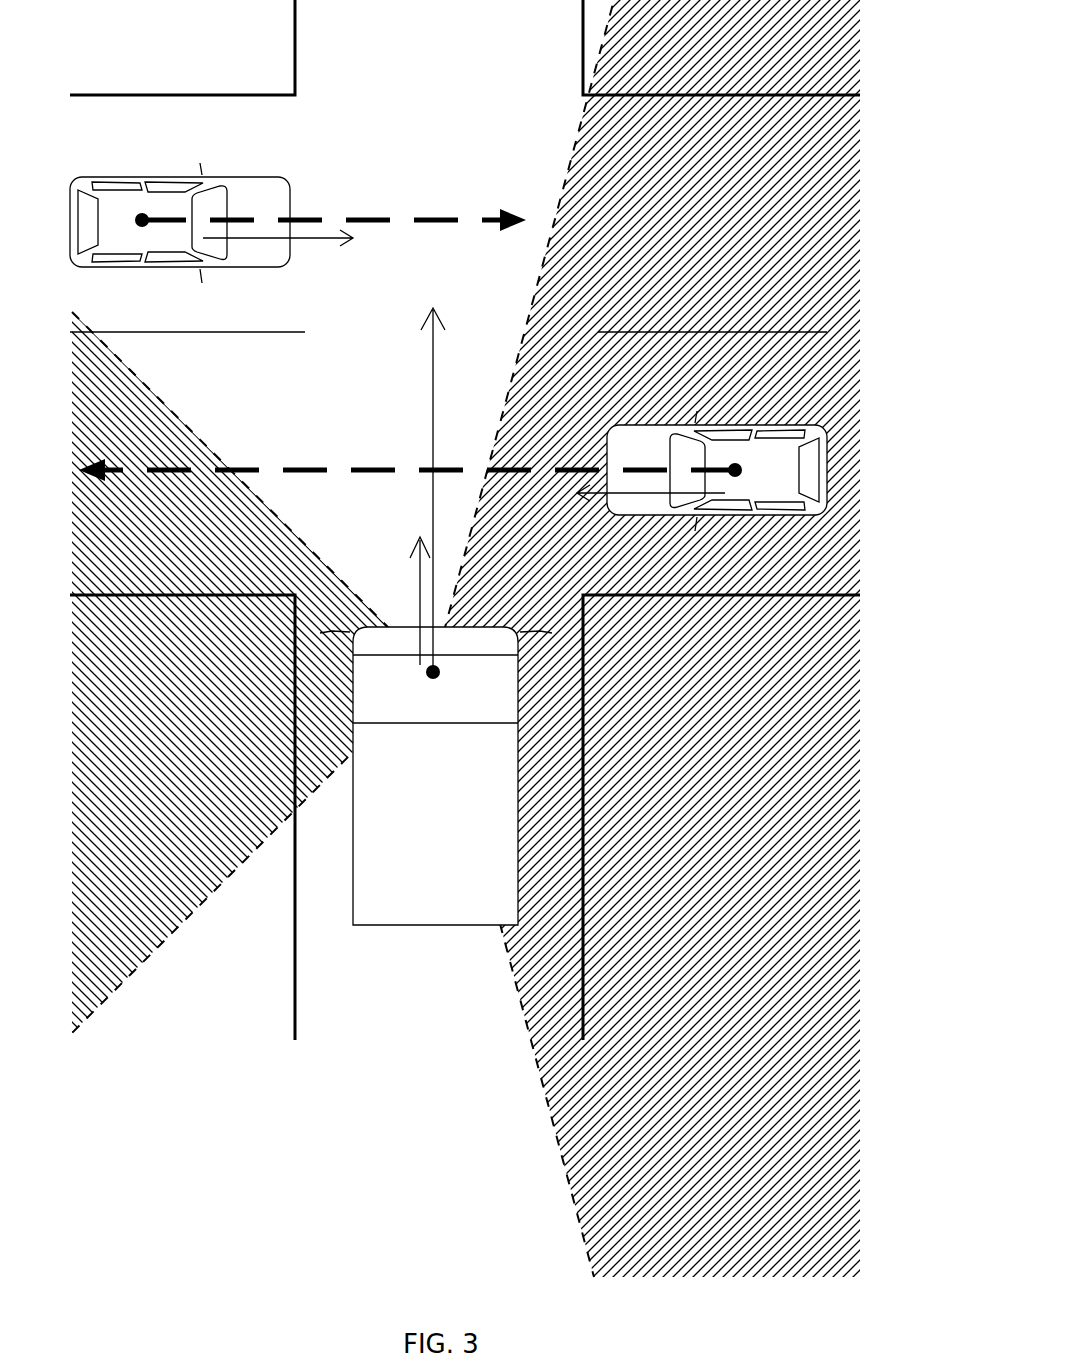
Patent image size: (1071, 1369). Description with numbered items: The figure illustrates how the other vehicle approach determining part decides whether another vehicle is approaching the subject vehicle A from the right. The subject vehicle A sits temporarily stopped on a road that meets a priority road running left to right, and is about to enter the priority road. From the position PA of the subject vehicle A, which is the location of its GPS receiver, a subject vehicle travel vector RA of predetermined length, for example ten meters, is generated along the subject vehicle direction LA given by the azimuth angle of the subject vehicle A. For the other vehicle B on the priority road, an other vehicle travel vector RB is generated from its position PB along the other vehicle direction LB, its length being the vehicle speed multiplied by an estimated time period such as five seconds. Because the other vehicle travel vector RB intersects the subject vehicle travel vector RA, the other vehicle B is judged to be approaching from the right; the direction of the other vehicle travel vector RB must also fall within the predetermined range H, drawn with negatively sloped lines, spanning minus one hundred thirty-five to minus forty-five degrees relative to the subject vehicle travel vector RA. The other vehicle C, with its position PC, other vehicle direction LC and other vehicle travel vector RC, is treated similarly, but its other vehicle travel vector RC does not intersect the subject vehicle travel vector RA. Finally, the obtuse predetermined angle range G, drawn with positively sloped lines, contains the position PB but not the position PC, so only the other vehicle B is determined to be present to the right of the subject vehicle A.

The subject vehicle A is at (432, 927).
The position of the subject vehicle PA is at (426, 674).
The subject vehicle travel vector RA is at (431, 510).
The subject vehicle direction LA is at (418, 568).
The other vehicle B is at (803, 423).
The position of the other vehicle PB is at (743, 470).
The other vehicle travel vector RB is at (500, 470).
The other vehicle direction LB is at (630, 510).
The other vehicle C is at (247, 176).
The position of the other vehicle PC is at (143, 217).
The other vehicle travel vector RC is at (305, 220).
The other vehicle direction LC is at (273, 243).
The predetermined angle range G is at (556, 1124).
The predetermined range H is at (172, 938).